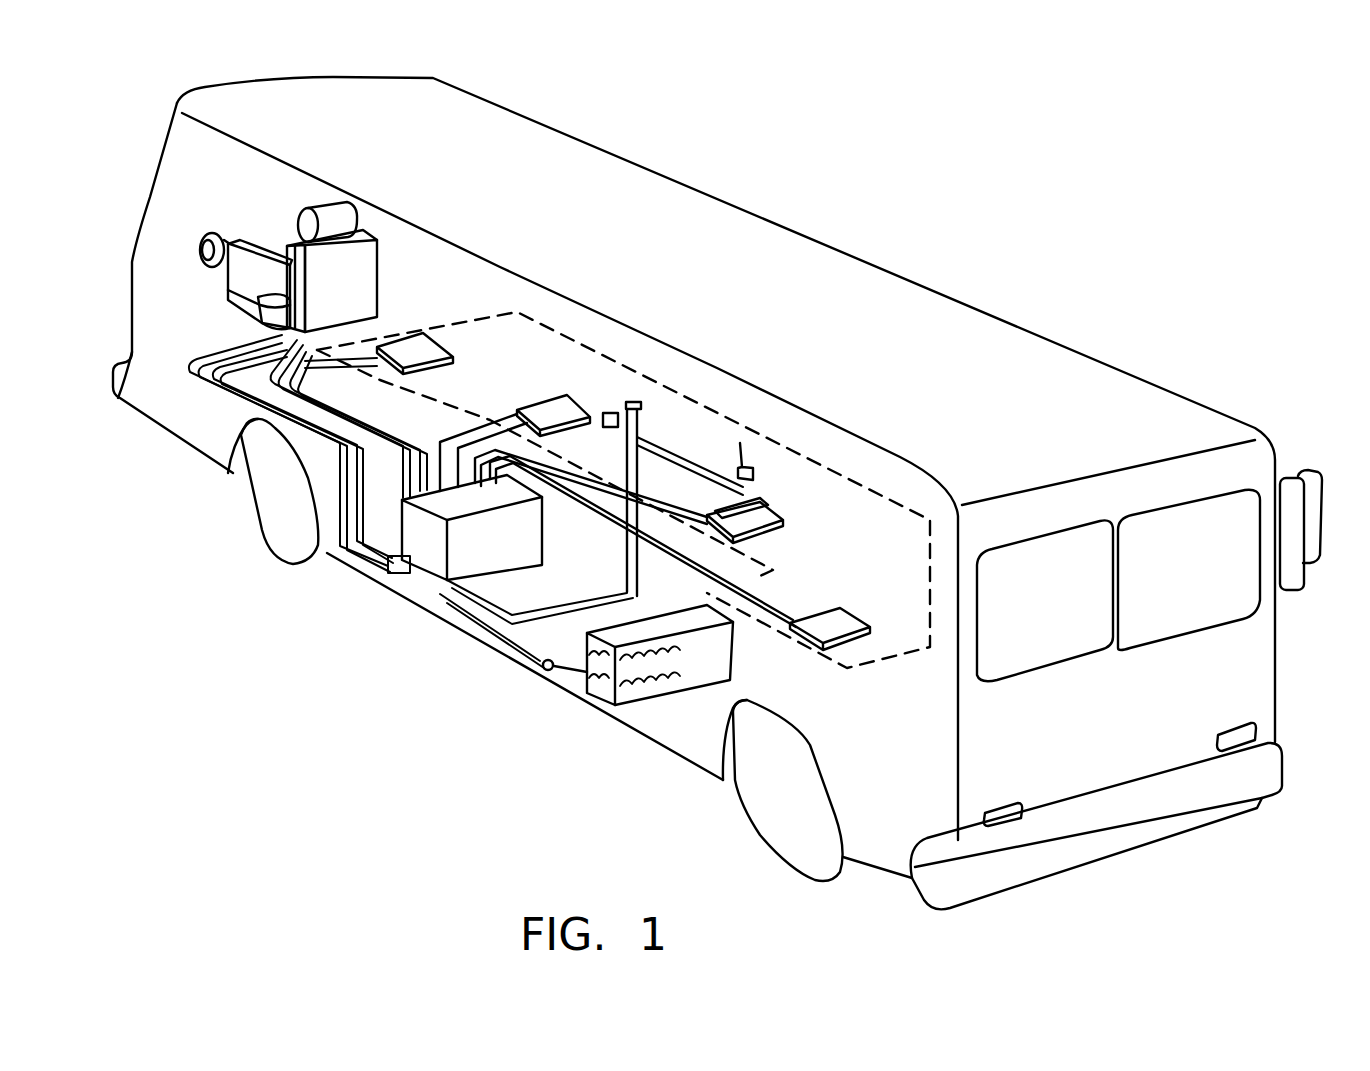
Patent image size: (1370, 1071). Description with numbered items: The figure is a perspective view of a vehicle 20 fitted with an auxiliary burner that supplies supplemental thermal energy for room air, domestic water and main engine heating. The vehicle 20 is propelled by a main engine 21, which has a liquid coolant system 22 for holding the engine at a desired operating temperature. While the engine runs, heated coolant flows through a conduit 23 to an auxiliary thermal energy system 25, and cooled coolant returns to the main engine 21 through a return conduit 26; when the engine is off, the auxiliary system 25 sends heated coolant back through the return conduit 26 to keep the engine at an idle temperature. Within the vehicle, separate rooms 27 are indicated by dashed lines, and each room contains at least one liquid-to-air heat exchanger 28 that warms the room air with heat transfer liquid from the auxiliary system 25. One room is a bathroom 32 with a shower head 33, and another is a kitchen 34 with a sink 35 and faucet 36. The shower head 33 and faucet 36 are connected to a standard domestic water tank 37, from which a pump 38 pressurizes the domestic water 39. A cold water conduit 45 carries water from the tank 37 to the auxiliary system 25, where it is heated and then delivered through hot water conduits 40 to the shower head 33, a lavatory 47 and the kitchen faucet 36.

The vehicle 20 is at (518, 108).
The main engine 21 is at (250, 252).
The liquid coolant system 22 is at (352, 273).
The conduit 23 is at (227, 347).
The auxiliary thermal energy system 25 is at (440, 587).
The return conduit 26 is at (220, 393).
The rooms 27 is at (522, 313).
The liquid-to-air heat exchanger 28 is at (427, 347).
The bathroom 32 is at (688, 396).
The shower head 33 is at (632, 400).
The kitchen 34 is at (853, 437).
The sink 35 is at (740, 500).
The faucet 36 is at (740, 443).
The domestic water tank 37 is at (730, 650).
The pump 38 is at (538, 667).
The domestic water 39 is at (635, 687).
The hot water conduit 40 is at (631, 400).
The cold water conduit 45 is at (438, 582).
The lavatory 47 is at (604, 412).